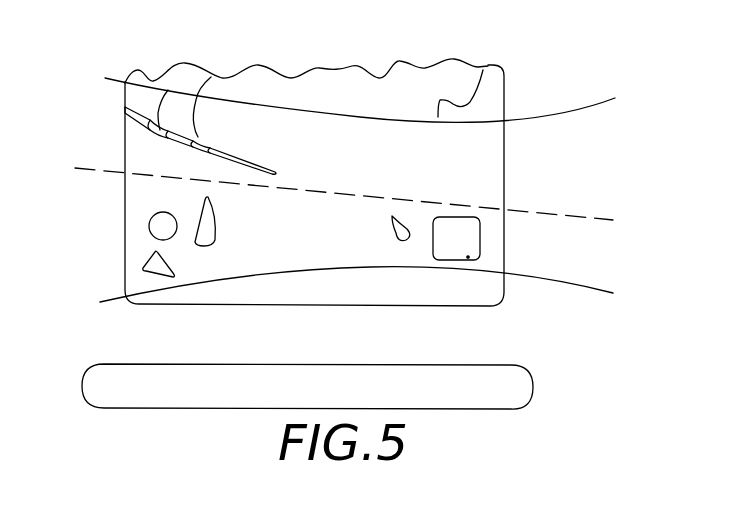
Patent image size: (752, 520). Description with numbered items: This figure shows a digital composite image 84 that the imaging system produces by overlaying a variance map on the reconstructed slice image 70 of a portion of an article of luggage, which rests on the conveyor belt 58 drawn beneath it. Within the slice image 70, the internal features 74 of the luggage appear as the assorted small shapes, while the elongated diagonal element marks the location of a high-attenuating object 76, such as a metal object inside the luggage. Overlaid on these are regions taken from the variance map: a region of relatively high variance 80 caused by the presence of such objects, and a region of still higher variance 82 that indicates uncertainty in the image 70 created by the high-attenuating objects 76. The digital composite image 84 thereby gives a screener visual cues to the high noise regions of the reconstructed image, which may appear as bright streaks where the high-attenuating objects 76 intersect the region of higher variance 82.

The partial image 70 is at (505, 162).
The digital composite image 84 is at (546, 70).
The region of still higher variance 82 is at (125, 148).
The high-attenuating object 76 is at (211, 77).
The region of relatively high variance 80 is at (483, 70).
The internal features 74 is at (149, 224).
The conveyor belt 58 is at (520, 370).